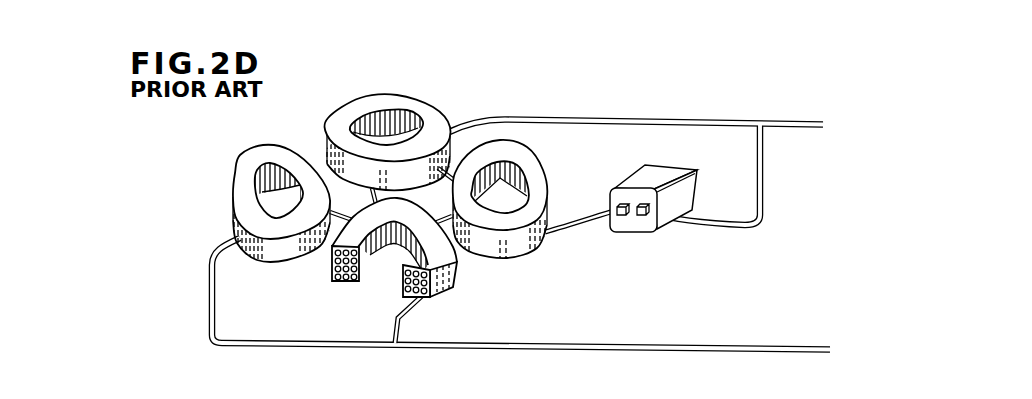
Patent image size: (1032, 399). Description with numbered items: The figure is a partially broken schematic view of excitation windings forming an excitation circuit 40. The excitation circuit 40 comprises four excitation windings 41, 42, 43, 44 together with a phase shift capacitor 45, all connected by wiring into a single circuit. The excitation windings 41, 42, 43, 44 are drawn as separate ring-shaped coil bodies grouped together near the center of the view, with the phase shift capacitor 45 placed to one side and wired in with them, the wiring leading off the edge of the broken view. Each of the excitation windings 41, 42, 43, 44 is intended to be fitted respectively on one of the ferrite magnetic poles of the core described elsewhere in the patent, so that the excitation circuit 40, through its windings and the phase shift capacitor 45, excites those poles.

The excitation circuit 40 is at (320, 149).
The excitation winding 41 is at (415, 98).
The excitation winding 42 is at (237, 210).
The excitation winding 43 is at (330, 270).
The excitation winding 44 is at (544, 184).
The phase shift capacitor 45 is at (650, 232).